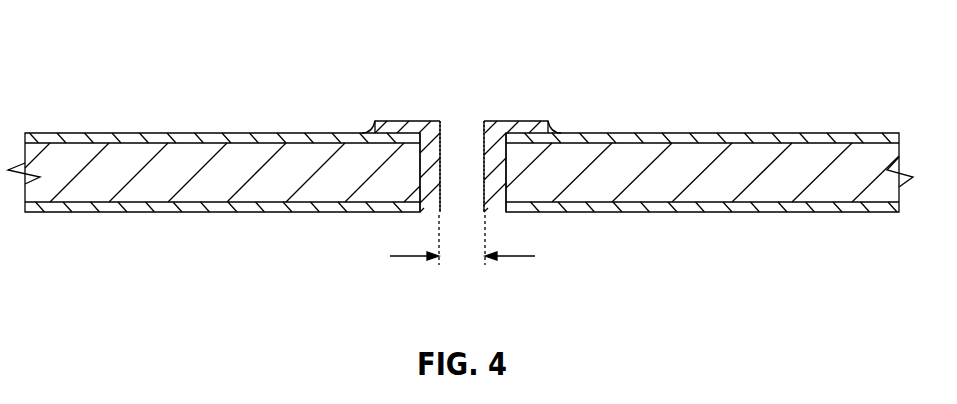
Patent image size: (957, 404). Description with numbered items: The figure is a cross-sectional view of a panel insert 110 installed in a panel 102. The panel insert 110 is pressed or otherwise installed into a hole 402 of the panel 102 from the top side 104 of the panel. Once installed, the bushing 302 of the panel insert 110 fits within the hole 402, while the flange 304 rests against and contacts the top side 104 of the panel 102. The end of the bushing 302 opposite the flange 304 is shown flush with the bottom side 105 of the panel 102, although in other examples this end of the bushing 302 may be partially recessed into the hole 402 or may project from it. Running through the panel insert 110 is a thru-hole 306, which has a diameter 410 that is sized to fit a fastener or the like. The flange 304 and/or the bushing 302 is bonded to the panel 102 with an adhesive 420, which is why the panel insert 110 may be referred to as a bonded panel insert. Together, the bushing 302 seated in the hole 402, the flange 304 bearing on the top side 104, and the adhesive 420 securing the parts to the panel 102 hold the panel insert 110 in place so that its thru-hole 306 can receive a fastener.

The panel 102 is at (804, 133).
The top side 104 is at (137, 133).
The bottom side 105 is at (140, 212).
The panel insert 110 is at (499, 70).
The bushing 302 is at (432, 165).
The flange 304 is at (395, 120).
The thru-hole 306 is at (468, 145).
The hole 402 is at (507, 175).
The diameter 410 is at (418, 256).
The adhesive 420 is at (367, 128).